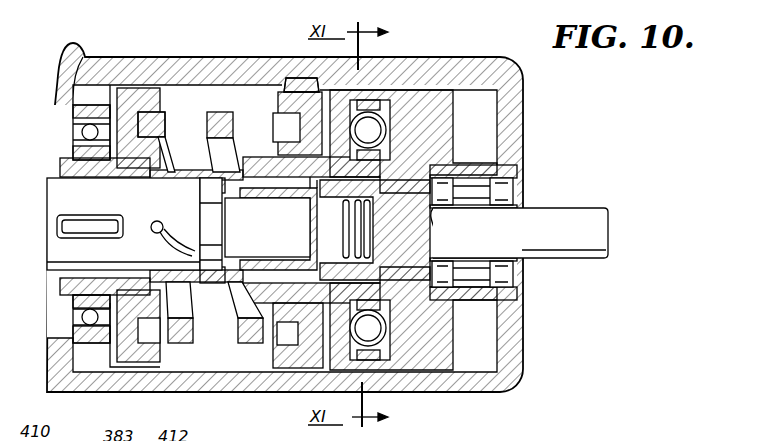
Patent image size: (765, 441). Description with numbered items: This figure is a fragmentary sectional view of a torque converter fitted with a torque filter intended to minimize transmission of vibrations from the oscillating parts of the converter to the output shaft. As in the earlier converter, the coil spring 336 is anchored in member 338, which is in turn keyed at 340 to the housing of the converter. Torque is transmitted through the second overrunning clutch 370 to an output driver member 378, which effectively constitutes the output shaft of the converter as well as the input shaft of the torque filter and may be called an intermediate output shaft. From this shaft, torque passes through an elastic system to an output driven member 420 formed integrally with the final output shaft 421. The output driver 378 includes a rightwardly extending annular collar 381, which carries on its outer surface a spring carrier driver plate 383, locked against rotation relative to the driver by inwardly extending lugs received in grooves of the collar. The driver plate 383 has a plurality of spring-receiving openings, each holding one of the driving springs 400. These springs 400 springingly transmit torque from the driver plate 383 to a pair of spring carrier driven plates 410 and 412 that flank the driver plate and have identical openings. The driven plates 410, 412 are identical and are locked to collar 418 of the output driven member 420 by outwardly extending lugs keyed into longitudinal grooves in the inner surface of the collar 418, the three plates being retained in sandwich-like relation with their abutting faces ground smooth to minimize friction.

The coil spring 336 is at (213, 113).
The member 338 is at (283, 100).
The key 340 is at (298, 78).
The second overrunning clutch 370 is at (271, 223).
The output driver member 378 is at (240, 302).
The annular collar 381 is at (400, 258).
The spring carrier driver plate 383 is at (368, 98).
The driving spring 400 is at (400, 114).
The spring carrier driven plate 410 is at (358, 352).
The spring carrier driven plate 412 is at (380, 357).
The collar 418 is at (77, 424).
The output driven member 420 is at (470, 142).
The final output shaft 421 is at (548, 222).